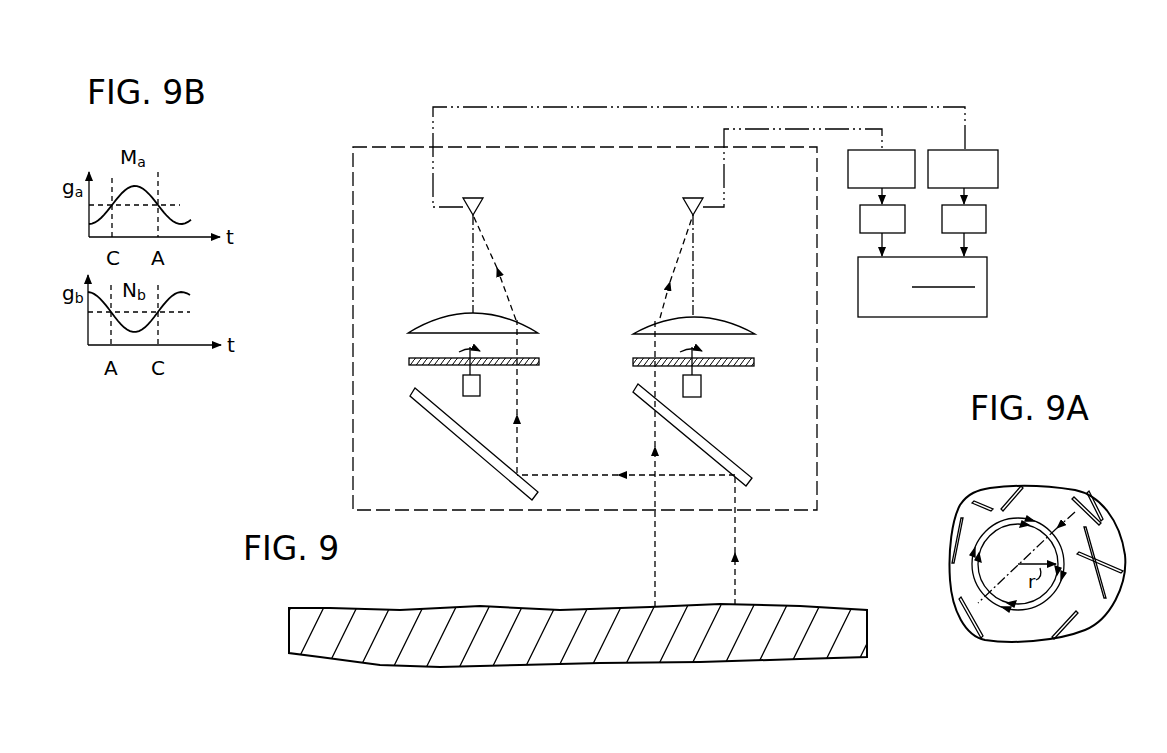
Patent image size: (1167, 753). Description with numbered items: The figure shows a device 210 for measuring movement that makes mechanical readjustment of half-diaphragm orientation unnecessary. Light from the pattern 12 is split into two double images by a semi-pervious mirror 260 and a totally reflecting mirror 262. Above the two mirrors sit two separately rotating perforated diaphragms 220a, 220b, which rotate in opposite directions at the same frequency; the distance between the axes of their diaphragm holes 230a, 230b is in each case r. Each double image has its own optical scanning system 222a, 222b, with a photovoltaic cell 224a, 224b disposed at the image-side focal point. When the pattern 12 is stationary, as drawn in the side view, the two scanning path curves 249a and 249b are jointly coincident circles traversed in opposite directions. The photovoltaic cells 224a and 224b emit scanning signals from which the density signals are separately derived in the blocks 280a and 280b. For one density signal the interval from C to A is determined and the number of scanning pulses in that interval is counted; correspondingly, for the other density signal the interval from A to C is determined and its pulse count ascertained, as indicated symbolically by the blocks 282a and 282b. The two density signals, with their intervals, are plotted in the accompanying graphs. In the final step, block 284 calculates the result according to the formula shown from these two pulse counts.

In FIG. 9, the pattern 12 is at (810, 598).
In FIG. 9A, the pattern 12 is at (985, 484).
In FIG. 9, the device for measuring movement 210 is at (828, 101).
In FIG. 9, the rotating perforated diaphragm 220a is at (735, 366).
In FIG. 9, the rotating perforated diaphragm 220b is at (415, 366).
In FIG. 9, the optical scanning system 222a is at (712, 328).
In FIG. 9, the optical scanning system 222b is at (437, 323).
In FIG. 9, the photovoltaic cell 224a is at (697, 216).
In FIG. 9, the photovoltaic cell 224b is at (471, 216).
In FIG. 9, the diaphragm hole 230a is at (653, 366).
In FIG. 9, the diaphragm hole 230b is at (523, 366).
In FIG. 9A, the scanning path curve 249a is at (1035, 518).
In FIG. 9A, the scanning path curve 249b is at (1037, 604).
In FIG. 9, the semi-pervious mirror 260 is at (720, 455).
In FIG. 9, the totally reflecting mirror 262 is at (465, 437).
In FIG. 9, the block for deriving density signal 280a is at (848, 171).
In FIG. 9, the block for deriving density signal 280b is at (998, 170).
In FIG. 9, the block for determining pulse count M_a 282a is at (860, 221).
In FIG. 9, the block for determining pulse count N_b 282b is at (986, 219).
In FIG. 9, the calculation block 284 is at (987, 290).